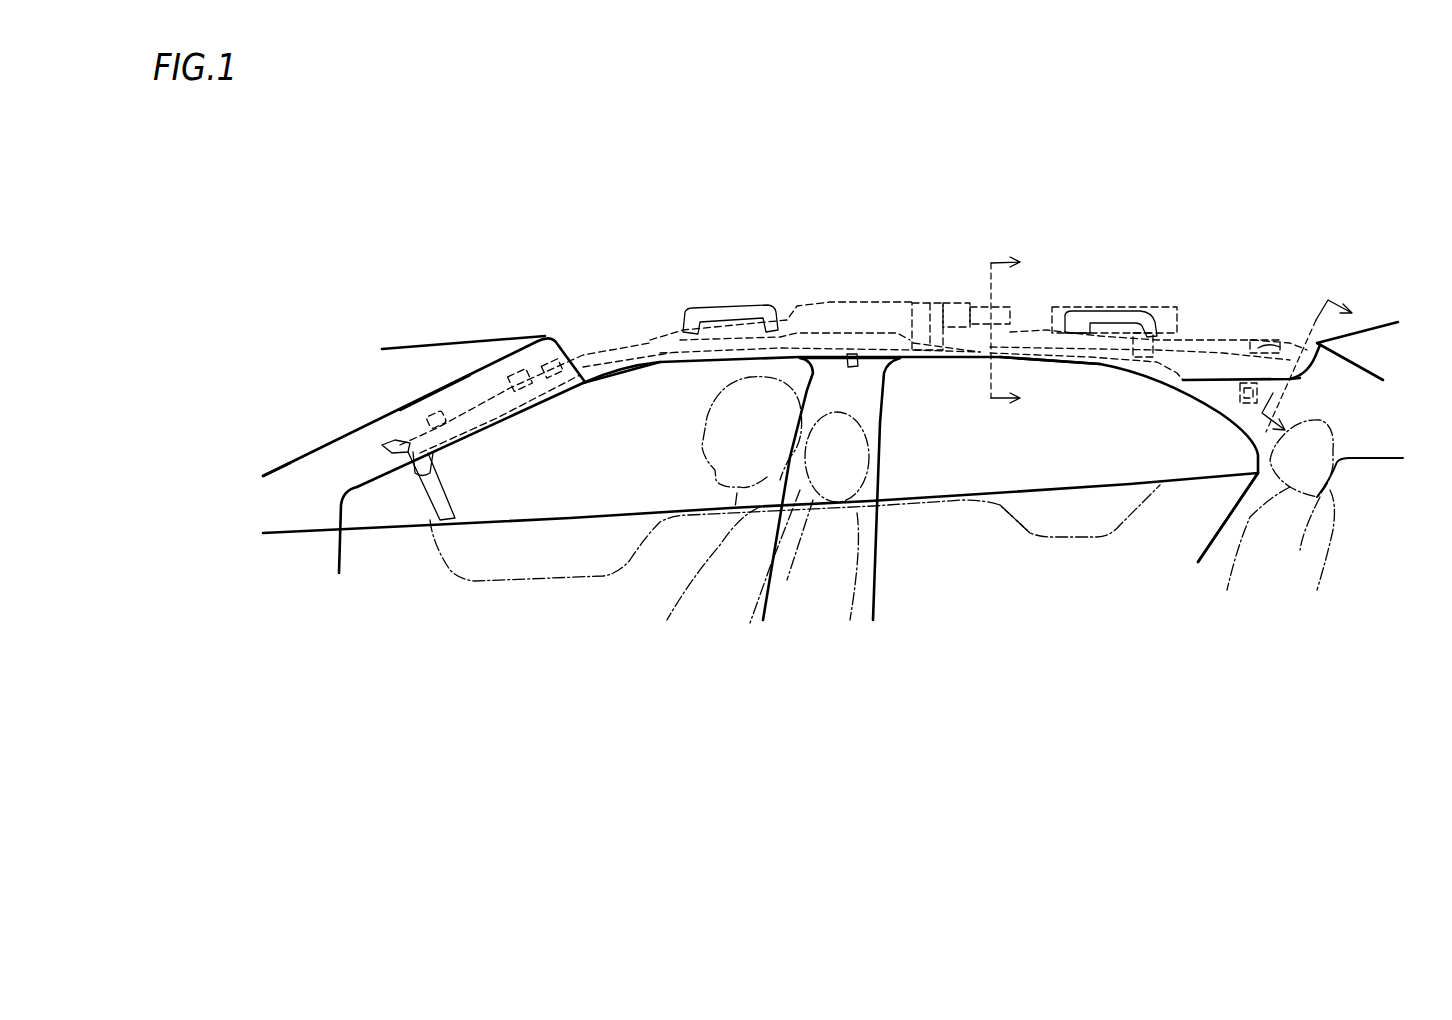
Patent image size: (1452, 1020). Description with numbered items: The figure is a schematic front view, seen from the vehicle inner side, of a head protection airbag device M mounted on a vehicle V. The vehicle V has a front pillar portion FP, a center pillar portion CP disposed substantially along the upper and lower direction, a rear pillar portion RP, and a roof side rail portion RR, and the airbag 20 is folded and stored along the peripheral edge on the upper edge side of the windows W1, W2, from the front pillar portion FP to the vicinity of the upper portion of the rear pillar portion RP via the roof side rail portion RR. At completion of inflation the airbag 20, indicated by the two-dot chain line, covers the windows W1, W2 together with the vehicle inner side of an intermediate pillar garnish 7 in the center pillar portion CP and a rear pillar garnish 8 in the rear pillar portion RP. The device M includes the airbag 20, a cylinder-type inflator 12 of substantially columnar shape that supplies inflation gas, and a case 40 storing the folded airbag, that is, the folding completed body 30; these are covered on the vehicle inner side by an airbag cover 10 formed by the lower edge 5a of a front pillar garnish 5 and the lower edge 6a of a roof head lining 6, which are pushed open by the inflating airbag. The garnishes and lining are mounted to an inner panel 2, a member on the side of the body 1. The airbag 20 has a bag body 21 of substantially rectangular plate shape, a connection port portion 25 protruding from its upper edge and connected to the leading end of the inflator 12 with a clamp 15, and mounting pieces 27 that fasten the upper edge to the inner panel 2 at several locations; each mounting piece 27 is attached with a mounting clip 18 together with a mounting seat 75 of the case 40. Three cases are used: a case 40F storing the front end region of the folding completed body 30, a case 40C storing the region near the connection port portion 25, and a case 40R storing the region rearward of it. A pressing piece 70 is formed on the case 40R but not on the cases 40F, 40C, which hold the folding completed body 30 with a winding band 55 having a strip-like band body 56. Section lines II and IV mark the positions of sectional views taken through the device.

The body 1 is at (807, 344).
The inner panel 2 is at (403, 420).
The front pillar garnish 5 is at (353, 432).
The lower edge of front pillar garnish 5a is at (373, 480).
The roof head lining 6 is at (616, 372).
The lower edge of roof head lining 6a is at (617, 392).
The intermediate pillar garnish 7 is at (873, 418).
The rear pillar garnish 8 is at (1232, 407).
The airbag cover 10 is at (504, 488).
The inflator 12 is at (959, 305).
The clamp 15 is at (950, 300).
The mounting clip 18 is at (1117, 310).
The airbag 20 is at (504, 556).
The bag body 21 is at (502, 568).
The connection port portion 25 is at (927, 300).
The mounting piece 27 is at (1153, 320).
The folding completed body 30 is at (513, 413).
The case 40 is at (844, 311).
The case 40F is at (532, 363).
The case 40C is at (827, 300).
The case 40R is at (1209, 334).
The winding band 55 is at (952, 406).
The band body 56 is at (988, 365).
The pressing piece 70 is at (1317, 357).
The mounting seat 75 is at (1125, 310).
The vehicle V is at (300, 428).
The front pillar portion FP is at (473, 364).
The center pillar portion CP is at (887, 463).
The rear pillar portion RP is at (1357, 373).
The roof side rail portion RR is at (1030, 317).
The head protection airbag device M is at (1289, 290).
The window W1 is at (550, 507).
The window W2 is at (1042, 470).
The section line II is at (1006, 335).
The section line IV is at (1310, 347).